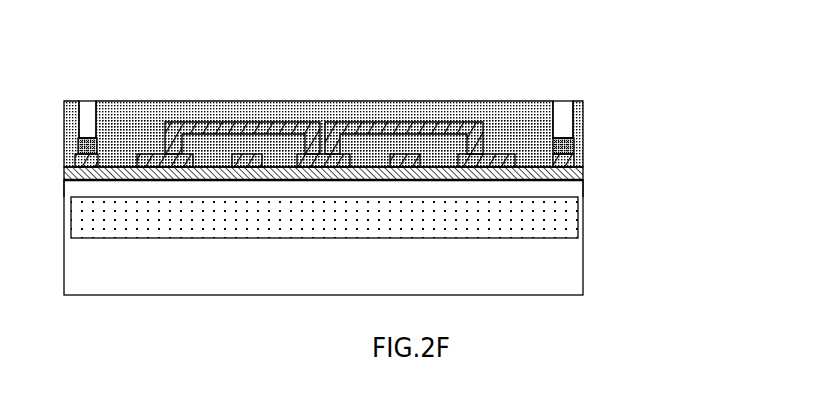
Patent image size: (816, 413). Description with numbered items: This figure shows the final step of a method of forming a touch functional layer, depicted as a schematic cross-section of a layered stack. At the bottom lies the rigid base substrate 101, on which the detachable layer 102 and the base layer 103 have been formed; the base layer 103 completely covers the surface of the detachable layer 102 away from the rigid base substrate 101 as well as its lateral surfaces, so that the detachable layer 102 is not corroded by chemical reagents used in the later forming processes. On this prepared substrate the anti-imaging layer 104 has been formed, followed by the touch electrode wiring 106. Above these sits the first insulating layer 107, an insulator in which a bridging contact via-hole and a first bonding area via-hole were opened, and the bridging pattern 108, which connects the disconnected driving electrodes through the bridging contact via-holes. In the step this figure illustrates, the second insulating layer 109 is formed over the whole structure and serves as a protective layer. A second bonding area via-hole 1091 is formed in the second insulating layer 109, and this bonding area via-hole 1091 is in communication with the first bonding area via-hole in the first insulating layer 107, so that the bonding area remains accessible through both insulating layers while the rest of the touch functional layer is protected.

The rigid base substrate 101 is at (570, 255).
The detachable layer 102 is at (570, 215).
The base layer 103 is at (583, 192).
The anti-imaging layer 104 is at (583, 173).
The touch electrode wiring 106 is at (583, 138).
The first insulating layer 107 is at (427, 143).
The bridging pattern 108 is at (392, 120).
The second insulating layer 109 is at (280, 101).
The second bonding area via-hole 1091 is at (560, 113).